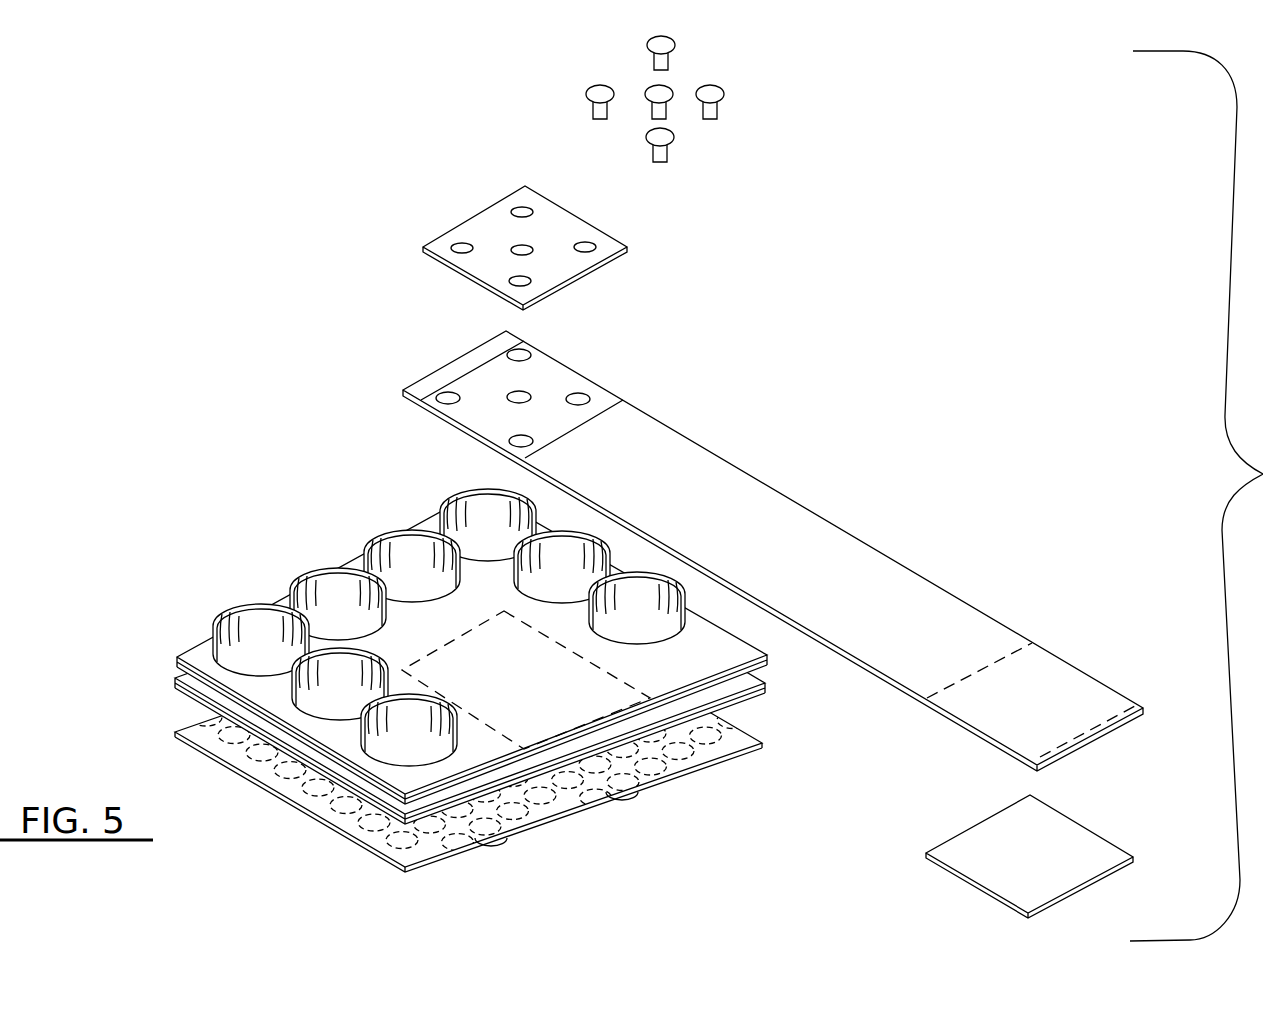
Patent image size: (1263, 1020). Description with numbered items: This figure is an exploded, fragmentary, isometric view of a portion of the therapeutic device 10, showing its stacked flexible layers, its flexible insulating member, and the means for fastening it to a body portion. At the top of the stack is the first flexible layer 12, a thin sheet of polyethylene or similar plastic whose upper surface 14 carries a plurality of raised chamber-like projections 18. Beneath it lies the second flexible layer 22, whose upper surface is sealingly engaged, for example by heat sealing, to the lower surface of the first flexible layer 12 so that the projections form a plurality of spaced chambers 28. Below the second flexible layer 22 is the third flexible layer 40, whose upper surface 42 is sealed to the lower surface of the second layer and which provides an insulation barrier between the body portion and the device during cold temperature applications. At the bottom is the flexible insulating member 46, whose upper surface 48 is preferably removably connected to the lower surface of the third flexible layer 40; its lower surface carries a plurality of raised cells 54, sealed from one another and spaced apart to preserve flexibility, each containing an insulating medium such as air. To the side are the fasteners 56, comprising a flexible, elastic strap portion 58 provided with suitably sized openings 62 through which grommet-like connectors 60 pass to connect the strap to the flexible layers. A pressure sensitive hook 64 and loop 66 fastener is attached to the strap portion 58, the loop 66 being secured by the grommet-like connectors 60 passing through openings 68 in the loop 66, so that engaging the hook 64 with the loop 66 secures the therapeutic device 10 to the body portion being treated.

The therapeutic device 10 is at (617, 477).
The first flexible layer 12 is at (429, 647).
The upper surface 14 is at (203, 648).
The raised chamber-like projections 18 is at (466, 621).
The second flexible layer 22 is at (177, 667).
The chambers 28 is at (382, 543).
The third flexible layer 40 is at (440, 685).
The upper surface 42 is at (207, 693).
The flexible insulating member 46 is at (463, 741).
The upper surface 48 is at (183, 725).
The raised cells 54 is at (262, 793).
The fasteners 56 is at (758, 551).
The elastic strap portion 58 is at (835, 550).
The grommet-like connectors 60 is at (595, 83).
The openings 62 is at (447, 396).
The hook 64 is at (973, 831).
The loop 66 is at (496, 243).
The openings 68 is at (517, 209).